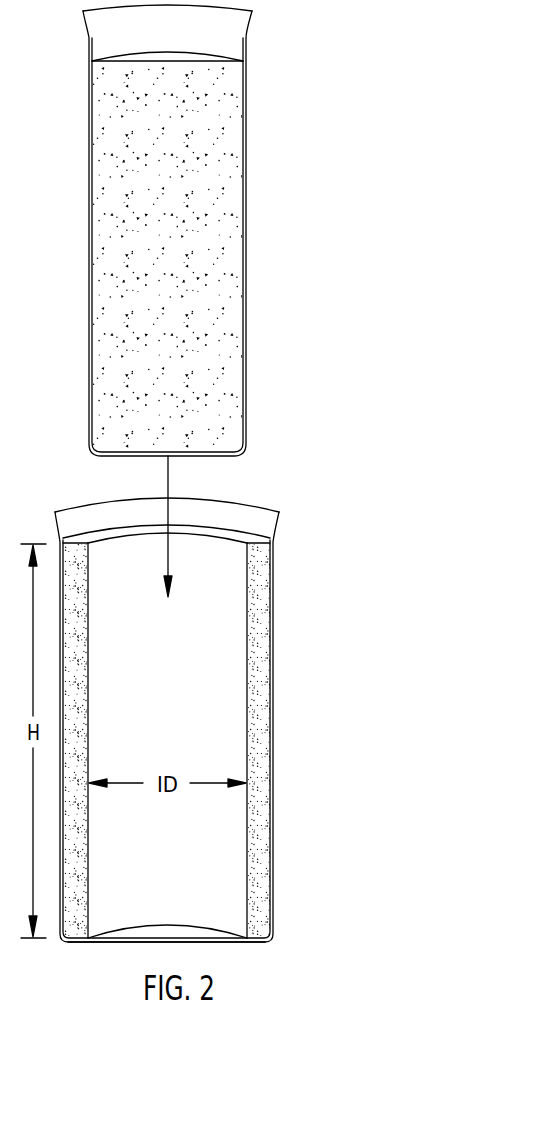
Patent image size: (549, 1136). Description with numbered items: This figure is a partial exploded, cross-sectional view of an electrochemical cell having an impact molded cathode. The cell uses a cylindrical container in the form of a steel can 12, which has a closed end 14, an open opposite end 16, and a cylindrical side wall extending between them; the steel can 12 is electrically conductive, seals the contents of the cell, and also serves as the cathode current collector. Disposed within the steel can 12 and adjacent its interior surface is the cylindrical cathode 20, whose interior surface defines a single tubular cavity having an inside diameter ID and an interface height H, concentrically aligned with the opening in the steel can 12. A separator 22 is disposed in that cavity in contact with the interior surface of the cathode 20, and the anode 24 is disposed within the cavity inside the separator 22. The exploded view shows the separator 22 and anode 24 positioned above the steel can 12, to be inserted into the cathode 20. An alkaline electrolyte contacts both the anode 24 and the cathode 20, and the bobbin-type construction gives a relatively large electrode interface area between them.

The steel can 12 is at (274, 578).
The closed end 14 is at (253, 942).
The open end 16 is at (255, 510).
The cathode 20 is at (263, 650).
The separator 22 is at (247, 205).
The anode 24 is at (215, 153).